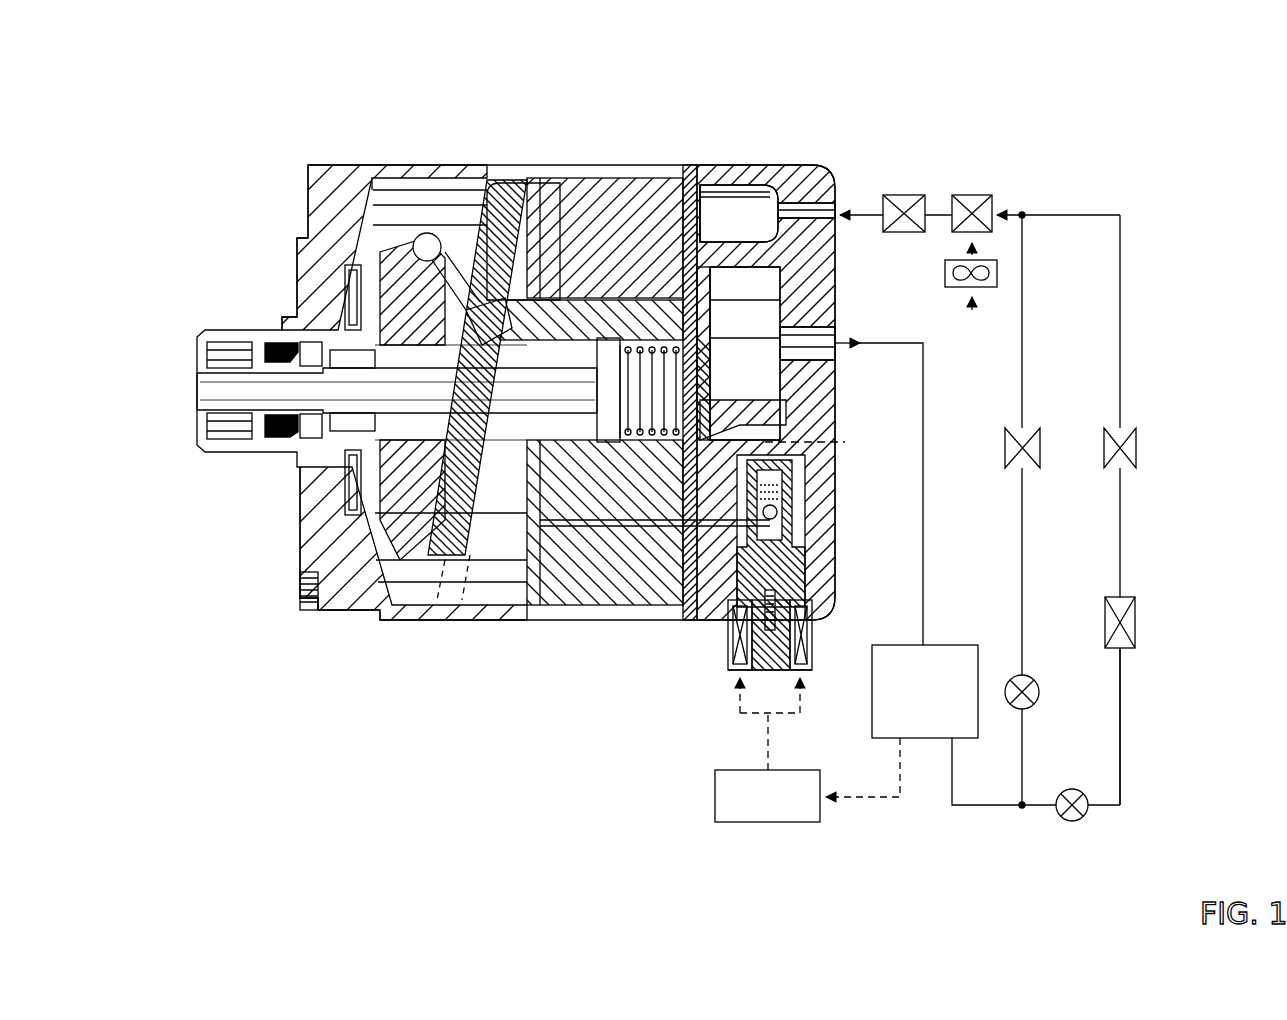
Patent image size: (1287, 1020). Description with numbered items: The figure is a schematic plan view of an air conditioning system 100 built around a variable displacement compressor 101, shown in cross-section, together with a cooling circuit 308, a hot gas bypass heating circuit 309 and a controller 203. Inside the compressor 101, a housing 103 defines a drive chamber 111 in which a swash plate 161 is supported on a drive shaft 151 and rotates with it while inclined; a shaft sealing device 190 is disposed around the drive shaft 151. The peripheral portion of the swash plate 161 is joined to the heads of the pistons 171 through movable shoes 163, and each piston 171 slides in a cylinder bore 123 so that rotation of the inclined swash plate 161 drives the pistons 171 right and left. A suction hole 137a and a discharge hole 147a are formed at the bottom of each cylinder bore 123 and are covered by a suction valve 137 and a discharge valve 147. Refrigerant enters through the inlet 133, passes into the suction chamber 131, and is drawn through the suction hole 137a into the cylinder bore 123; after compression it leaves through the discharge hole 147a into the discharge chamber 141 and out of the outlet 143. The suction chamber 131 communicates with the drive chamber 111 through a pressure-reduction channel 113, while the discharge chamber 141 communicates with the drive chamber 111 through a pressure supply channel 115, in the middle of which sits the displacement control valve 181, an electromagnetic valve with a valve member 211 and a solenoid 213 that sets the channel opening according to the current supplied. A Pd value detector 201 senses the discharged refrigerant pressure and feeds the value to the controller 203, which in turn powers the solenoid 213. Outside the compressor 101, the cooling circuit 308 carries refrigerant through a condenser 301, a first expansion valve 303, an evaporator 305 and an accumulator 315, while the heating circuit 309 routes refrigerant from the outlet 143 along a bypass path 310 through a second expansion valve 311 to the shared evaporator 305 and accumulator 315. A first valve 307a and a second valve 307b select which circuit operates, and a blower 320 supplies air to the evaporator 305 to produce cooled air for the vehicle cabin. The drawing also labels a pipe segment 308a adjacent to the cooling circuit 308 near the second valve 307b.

The air conditioning system 100 is at (1012, 172).
The compressor 101 is at (441, 152).
The housing 103 is at (396, 612).
The drive chamber 111 is at (495, 575).
The pressure-reduction channel 113 is at (690, 488).
The pressure supply channel 115 is at (845, 442).
The cylinder bore 123 is at (585, 180).
The suction chamber 131 is at (728, 180).
The inlet 133 is at (800, 170).
The suction valve 137 is at (703, 220).
The suction hole 137a is at (683, 165).
The discharge chamber 141 is at (765, 312).
The outlet 143 is at (800, 336).
The discharge valve 147 is at (713, 290).
The discharge hole 147a is at (745, 353).
The drive shaft 151 is at (230, 415).
The swash plate 161 is at (453, 560).
The shoe 163 is at (495, 400).
The piston 171 is at (632, 180).
The displacement control valve 181 is at (724, 639).
The shaft sealing device 190 is at (276, 338).
The Pd value detector 201 is at (953, 645).
The controller 203 is at (715, 795).
The valve member 211 is at (778, 514).
The solenoid 213 is at (808, 641).
The condenser 301 is at (1137, 620).
The first expansion valve 303 is at (1136, 447).
The evaporator 305 is at (970, 195).
The first valve 307a is at (1072, 788).
The second valve 307b is at (1034, 680).
The cooling circuit 308 is at (1120, 712).
The refrigerant pipe 308a is at (1120, 770).
The heating circuit 309 is at (1023, 253).
The bypass path 310 is at (1023, 310).
The second expansion valve 311 is at (1038, 447).
The accumulator 315 is at (897, 195).
The blower 320 is at (992, 290).